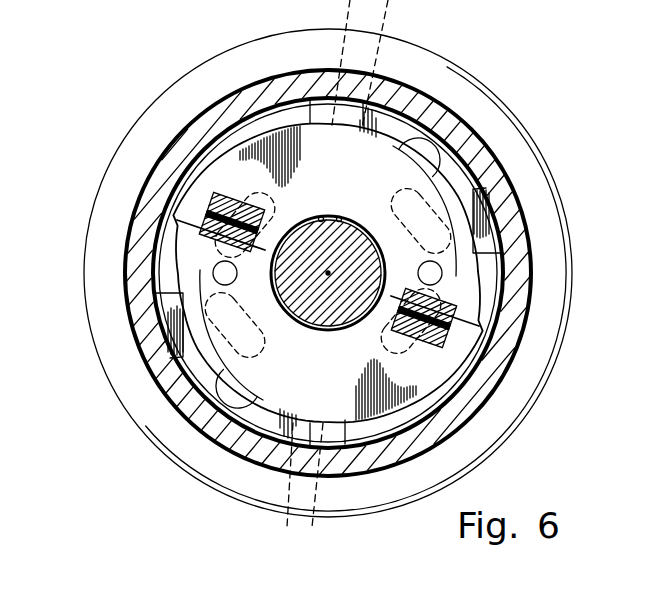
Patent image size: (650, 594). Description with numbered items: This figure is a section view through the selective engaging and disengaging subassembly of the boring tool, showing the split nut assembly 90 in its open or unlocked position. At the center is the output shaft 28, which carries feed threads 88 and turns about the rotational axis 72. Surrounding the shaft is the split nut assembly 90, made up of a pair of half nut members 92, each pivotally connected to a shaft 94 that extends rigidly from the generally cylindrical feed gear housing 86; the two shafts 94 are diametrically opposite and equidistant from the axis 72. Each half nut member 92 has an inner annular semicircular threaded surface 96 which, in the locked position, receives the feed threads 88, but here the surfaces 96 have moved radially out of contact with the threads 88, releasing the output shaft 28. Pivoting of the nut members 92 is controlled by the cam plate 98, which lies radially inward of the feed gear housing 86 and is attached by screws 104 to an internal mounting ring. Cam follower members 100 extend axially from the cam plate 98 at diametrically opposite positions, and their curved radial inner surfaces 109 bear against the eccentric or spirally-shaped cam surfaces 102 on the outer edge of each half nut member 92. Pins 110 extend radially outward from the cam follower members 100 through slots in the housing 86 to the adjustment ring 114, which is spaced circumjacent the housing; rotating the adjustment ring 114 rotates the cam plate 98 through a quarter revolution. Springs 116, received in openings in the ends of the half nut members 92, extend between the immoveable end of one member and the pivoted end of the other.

The adjustment ring 114 is at (540, 194).
The cam surfaces 102 is at (288, 124).
The screws 104 is at (467, 160).
The feed gear housing 86 is at (180, 150).
The cam plate 98 is at (497, 297).
The split nut assembly 90 is at (474, 313).
The half nut members 92 is at (387, 178).
The cam follower members 100 is at (393, 128).
The pins 110 is at (380, 22).
The curved radial inner surfaces 109 is at (292, 135).
The springs 116 is at (232, 216).
The shafts 94 is at (217, 263).
The rotational axis 72 is at (328, 275).
The output shaft 28 is at (318, 334).
The feed threads 88 is at (324, 205).
The inner annular semicircular surface 96 is at (340, 216).